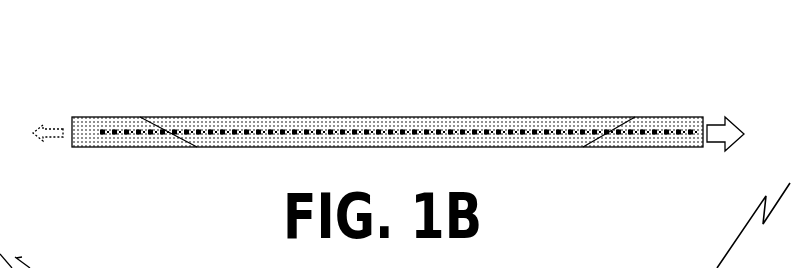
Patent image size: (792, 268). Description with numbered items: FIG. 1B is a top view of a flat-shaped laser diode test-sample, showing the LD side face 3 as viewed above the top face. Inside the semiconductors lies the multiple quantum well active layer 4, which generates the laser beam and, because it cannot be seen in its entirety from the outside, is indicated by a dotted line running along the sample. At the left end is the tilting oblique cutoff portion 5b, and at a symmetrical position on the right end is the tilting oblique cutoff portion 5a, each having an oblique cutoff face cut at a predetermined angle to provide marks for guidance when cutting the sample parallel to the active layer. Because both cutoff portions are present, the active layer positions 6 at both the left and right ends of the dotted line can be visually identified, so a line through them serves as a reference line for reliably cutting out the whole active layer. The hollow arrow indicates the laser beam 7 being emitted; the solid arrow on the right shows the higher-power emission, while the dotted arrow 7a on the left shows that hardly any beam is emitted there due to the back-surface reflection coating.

The LD side face 3 is at (407, 118).
The multiple quantum well active layer 4 is at (280, 130).
The tilting oblique cutoff portion 5a is at (653, 118).
The tilting oblique cutoff portion 5b is at (120, 118).
The active layer position 6 is at (685, 120).
The laser beam 7 is at (723, 122).
The return light direction 7a is at (52, 125).